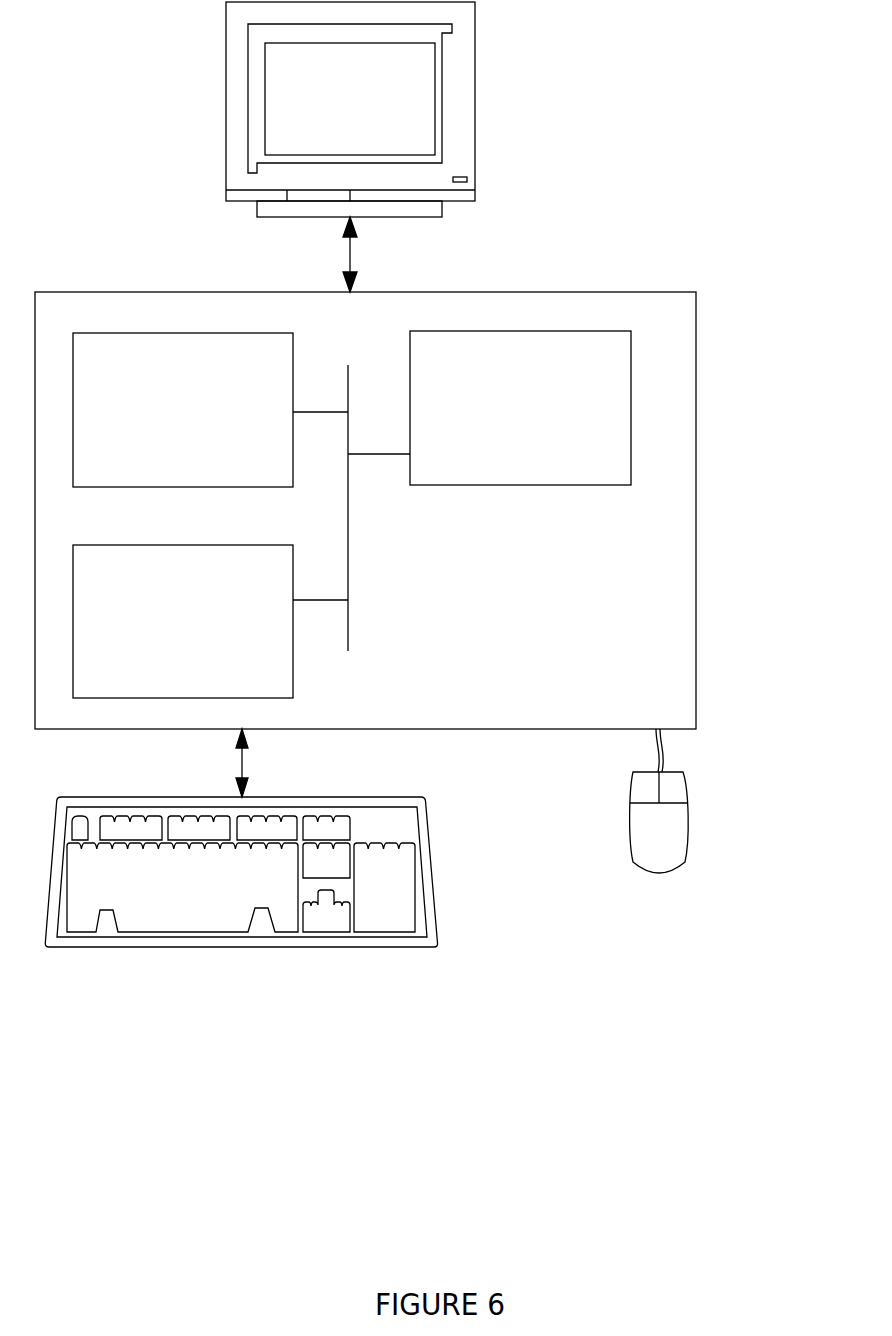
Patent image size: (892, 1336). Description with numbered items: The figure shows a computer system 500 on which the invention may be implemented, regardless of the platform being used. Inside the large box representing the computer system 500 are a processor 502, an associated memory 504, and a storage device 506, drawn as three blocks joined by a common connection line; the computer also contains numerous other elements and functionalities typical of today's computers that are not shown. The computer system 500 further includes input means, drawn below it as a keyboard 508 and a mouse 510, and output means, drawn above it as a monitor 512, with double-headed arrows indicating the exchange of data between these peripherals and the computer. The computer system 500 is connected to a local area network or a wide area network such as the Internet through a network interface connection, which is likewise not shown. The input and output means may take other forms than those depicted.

The computer system 500 is at (671, 167).
The processor 502 is at (516, 421).
The memory 504 is at (162, 424).
The storage device 506 is at (159, 634).
The keyboard 508 is at (154, 909).
The mouse 510 is at (638, 842).
The monitor 512 is at (329, 112).